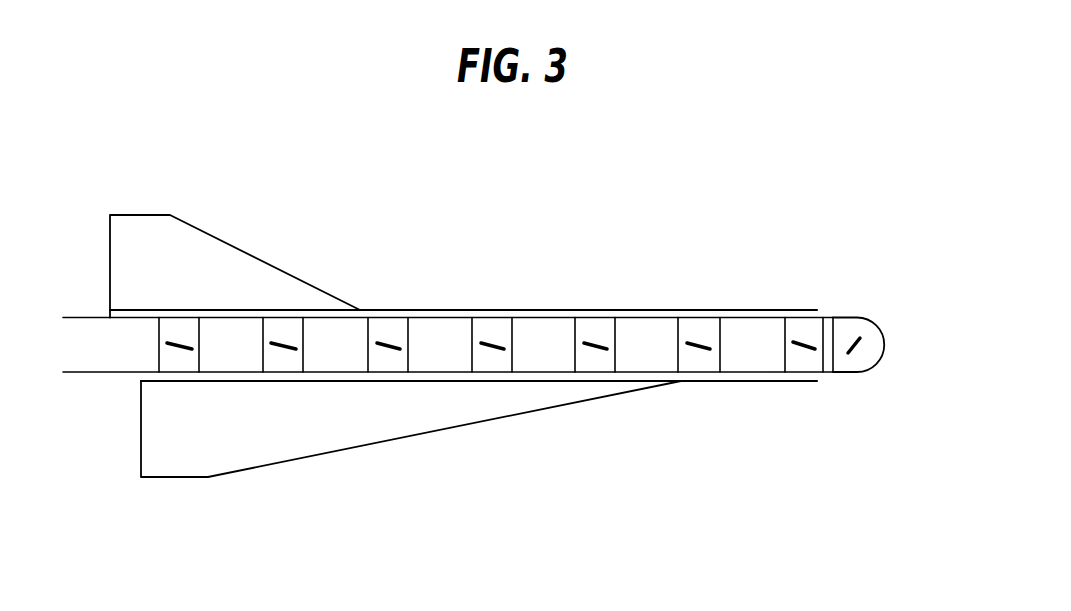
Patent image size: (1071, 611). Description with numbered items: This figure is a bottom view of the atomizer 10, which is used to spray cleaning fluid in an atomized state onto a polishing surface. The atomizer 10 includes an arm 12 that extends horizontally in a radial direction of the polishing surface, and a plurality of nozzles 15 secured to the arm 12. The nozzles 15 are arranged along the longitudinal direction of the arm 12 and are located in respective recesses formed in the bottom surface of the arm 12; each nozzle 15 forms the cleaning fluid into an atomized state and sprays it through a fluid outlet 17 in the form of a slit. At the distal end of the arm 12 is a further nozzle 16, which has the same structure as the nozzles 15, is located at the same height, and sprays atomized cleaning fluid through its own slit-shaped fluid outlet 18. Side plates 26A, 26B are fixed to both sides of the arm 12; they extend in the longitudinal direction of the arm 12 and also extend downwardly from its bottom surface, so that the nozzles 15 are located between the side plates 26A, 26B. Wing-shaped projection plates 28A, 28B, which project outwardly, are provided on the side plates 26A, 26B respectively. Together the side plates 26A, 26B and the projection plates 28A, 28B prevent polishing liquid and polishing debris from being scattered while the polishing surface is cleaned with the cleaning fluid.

The atomizer 10 is at (543, 273).
The arm 12 is at (753, 341).
The nozzle 15 is at (178, 363).
The nozzle 16 is at (867, 370).
The fluid outlet 17 is at (185, 341).
The fluid outlet 18 is at (868, 349).
The side plate 26A is at (653, 310).
The side plate 26B is at (742, 383).
The projection plate 28A is at (260, 258).
The projection plate 28B is at (318, 455).